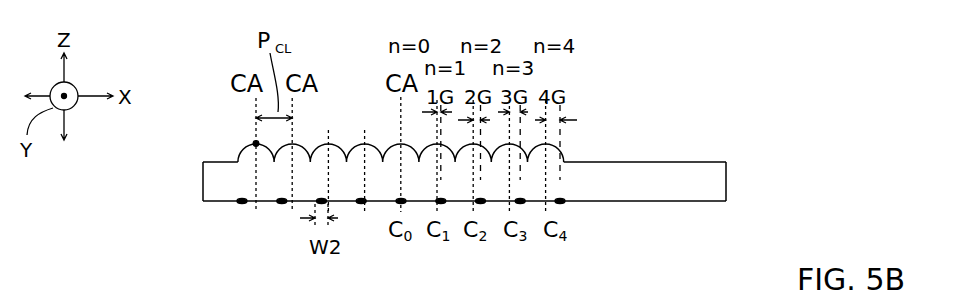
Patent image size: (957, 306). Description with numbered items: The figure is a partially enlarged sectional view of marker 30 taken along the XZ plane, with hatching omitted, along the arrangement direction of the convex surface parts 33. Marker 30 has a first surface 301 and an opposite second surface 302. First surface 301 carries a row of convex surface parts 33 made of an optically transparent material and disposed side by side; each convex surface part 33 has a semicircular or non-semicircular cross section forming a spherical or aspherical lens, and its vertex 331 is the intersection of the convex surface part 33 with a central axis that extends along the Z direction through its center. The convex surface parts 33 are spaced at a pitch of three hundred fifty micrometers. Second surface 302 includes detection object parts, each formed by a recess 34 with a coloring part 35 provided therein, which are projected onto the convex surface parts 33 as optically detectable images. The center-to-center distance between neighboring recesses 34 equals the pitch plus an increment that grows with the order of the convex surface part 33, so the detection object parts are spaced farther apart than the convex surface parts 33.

The marker 30 is at (772, 85).
The first surface 301 is at (692, 138).
The second surface 302 is at (690, 218).
The convex surface part 33 is at (366, 141).
The vertex 331 is at (256, 143).
The coloring part 35 is at (354, 234).
The recess 34 is at (282, 203).